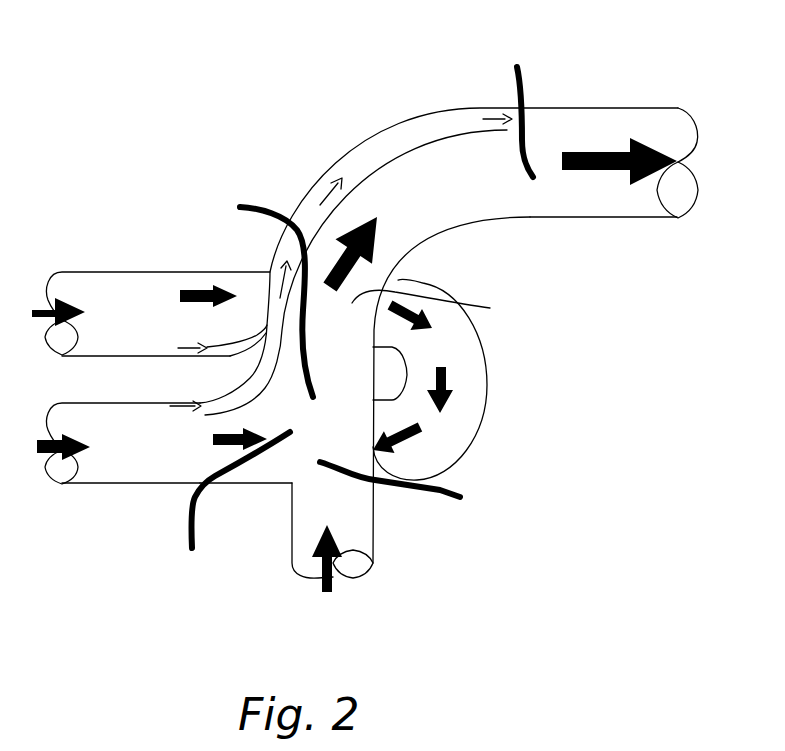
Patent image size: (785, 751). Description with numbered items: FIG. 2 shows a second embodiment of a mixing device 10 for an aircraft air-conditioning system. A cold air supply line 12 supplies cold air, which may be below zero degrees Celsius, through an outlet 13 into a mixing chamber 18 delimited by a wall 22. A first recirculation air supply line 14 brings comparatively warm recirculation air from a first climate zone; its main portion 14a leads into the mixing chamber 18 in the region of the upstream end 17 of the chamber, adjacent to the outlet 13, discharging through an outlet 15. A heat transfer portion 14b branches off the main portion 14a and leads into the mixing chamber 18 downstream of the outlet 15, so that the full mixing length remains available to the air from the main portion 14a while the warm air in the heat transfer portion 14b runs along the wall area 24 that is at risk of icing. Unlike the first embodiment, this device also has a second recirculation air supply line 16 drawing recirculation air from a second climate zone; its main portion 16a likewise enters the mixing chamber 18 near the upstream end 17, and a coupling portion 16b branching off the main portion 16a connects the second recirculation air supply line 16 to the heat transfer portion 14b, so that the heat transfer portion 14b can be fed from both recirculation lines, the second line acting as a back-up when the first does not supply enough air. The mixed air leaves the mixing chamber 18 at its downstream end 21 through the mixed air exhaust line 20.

The mixing device 10 is at (602, 374).
The cold air supply line 12 is at (362, 518).
The outlet of the cold air supply line 13 is at (415, 495).
The first recirculation air supply line 14 is at (133, 462).
The main portion of the first recirculation air supply line 14a is at (253, 472).
The heat transfer portion of the first recirculation air supply line 14b is at (375, 155).
The outlet of the main portion of the first recirculation air supply line 15 is at (232, 521).
The second recirculation air supply line 16 is at (113, 335).
The main portion of the second recirculation air supply line 16a is at (462, 433).
The coupling portion 16b is at (232, 347).
The upstream end of the mixing chamber 17 is at (256, 293).
The mixing chamber 18 is at (449, 309).
The mixed air exhaust line 20 is at (643, 123).
The downstream end of the mixing chamber 21 is at (527, 97).
The wall 22 is at (443, 228).
The wall area at risk of icing 24 is at (343, 186).